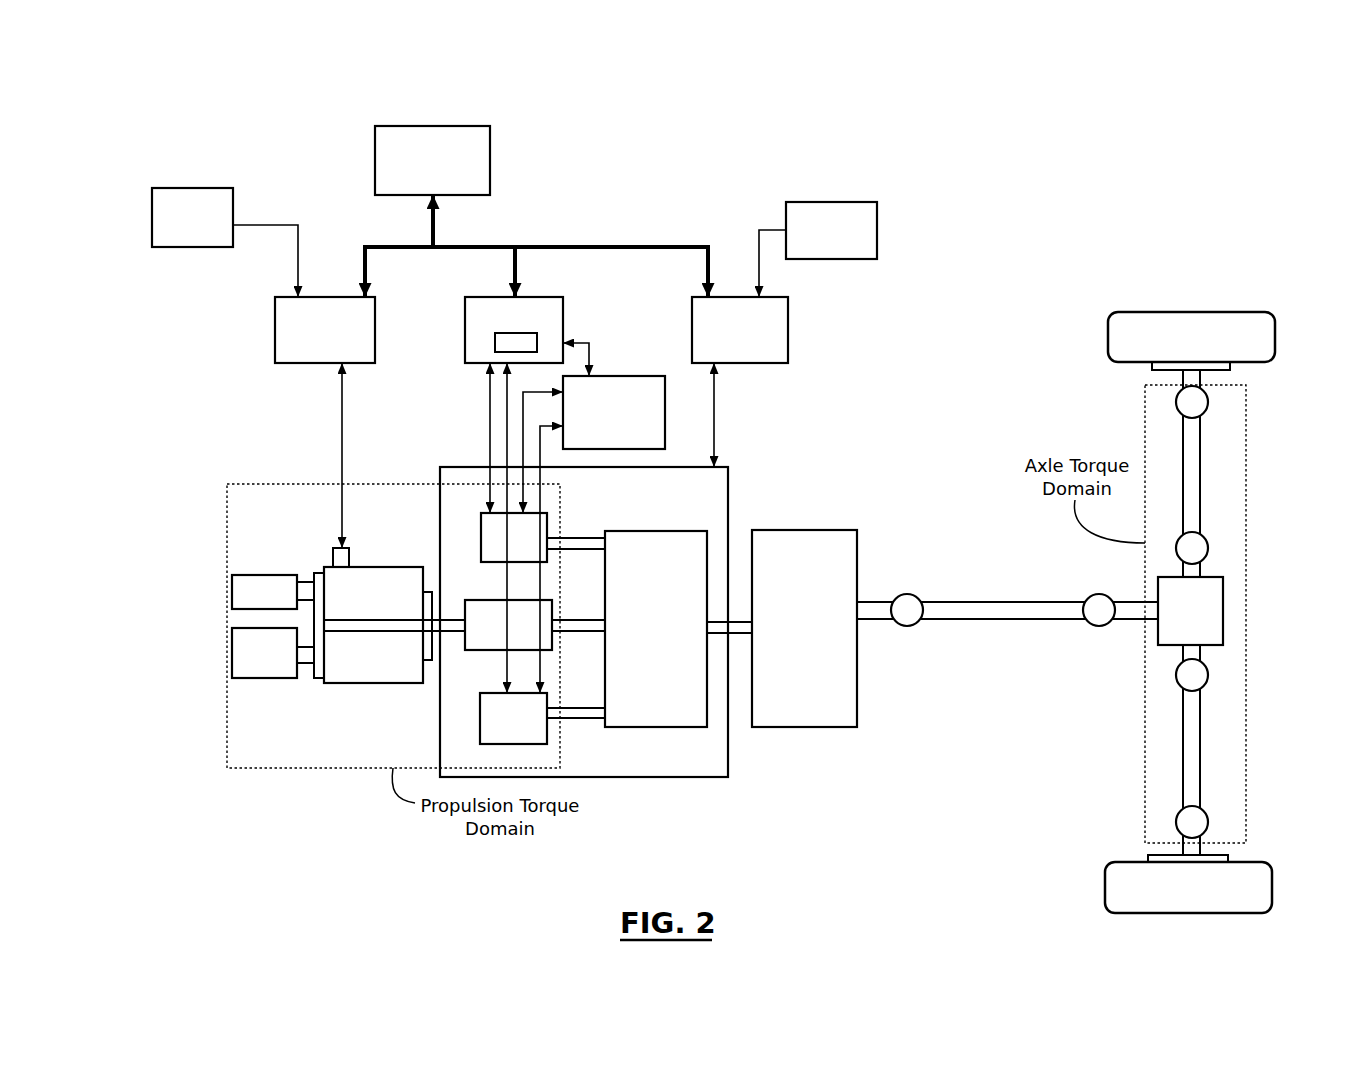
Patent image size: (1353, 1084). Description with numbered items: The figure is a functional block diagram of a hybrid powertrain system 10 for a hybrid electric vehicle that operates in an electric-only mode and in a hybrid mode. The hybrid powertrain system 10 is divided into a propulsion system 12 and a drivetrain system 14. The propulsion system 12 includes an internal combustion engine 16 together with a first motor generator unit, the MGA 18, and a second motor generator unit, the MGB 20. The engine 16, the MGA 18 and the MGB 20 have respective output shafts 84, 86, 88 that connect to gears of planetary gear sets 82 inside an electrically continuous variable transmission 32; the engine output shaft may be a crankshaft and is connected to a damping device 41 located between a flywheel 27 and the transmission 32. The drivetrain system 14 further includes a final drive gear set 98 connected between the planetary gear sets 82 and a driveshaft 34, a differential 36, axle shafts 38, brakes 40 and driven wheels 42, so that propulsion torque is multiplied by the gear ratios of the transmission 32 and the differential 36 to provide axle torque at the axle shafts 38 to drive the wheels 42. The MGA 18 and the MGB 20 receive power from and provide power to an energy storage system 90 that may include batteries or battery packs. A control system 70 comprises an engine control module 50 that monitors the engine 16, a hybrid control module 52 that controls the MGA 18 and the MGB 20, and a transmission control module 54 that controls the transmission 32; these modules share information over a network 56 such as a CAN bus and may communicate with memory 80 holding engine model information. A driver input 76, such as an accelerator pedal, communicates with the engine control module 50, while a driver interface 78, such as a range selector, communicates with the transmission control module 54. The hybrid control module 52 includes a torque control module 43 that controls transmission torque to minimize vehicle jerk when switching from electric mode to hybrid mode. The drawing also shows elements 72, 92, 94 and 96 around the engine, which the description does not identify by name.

The hybrid powertrain system 10 is at (160, 82).
The propulsion system 12 is at (230, 783).
The drivetrain system 14 is at (757, 773).
The internal combustion engine 16 is at (390, 683).
The first motor generator unit (MGA) 18 is at (481, 553).
The second motor generator unit (MGB) 20 is at (480, 718).
The flywheel 27 is at (428, 592).
The electrically continuous variable transmission 32 is at (728, 480).
The driveshaft 34 is at (962, 602).
The differential 36 is at (1223, 595).
The axle shafts 38 is at (1200, 482).
The brakes 40 is at (1225, 370).
The damping device 41 is at (480, 650).
The driven wheels 42 is at (1125, 362).
The torque control module 43 is at (537, 340).
The engine control module 50 is at (275, 327).
The hybrid control module 52 is at (465, 310).
The transmission control module 54 is at (788, 328).
The network 56 is at (545, 247).
The control system 70 is at (330, 205).
The engine sensor 72 is at (350, 558).
The driver input 76 is at (193, 188).
The driver interface 78 is at (830, 202).
The memory 80 is at (490, 145).
The planetary gear sets 82 is at (657, 727).
The engine output shaft 84 is at (447, 618).
The MGA output shaft 86 is at (562, 538).
The MGB output shaft 88 is at (562, 708).
The energy storage system 90 is at (615, 376).
The starter motor 92 is at (262, 678).
The alternator 94 is at (265, 575).
The belt drive 96 is at (305, 668).
The final drive gear set 98 is at (805, 727).